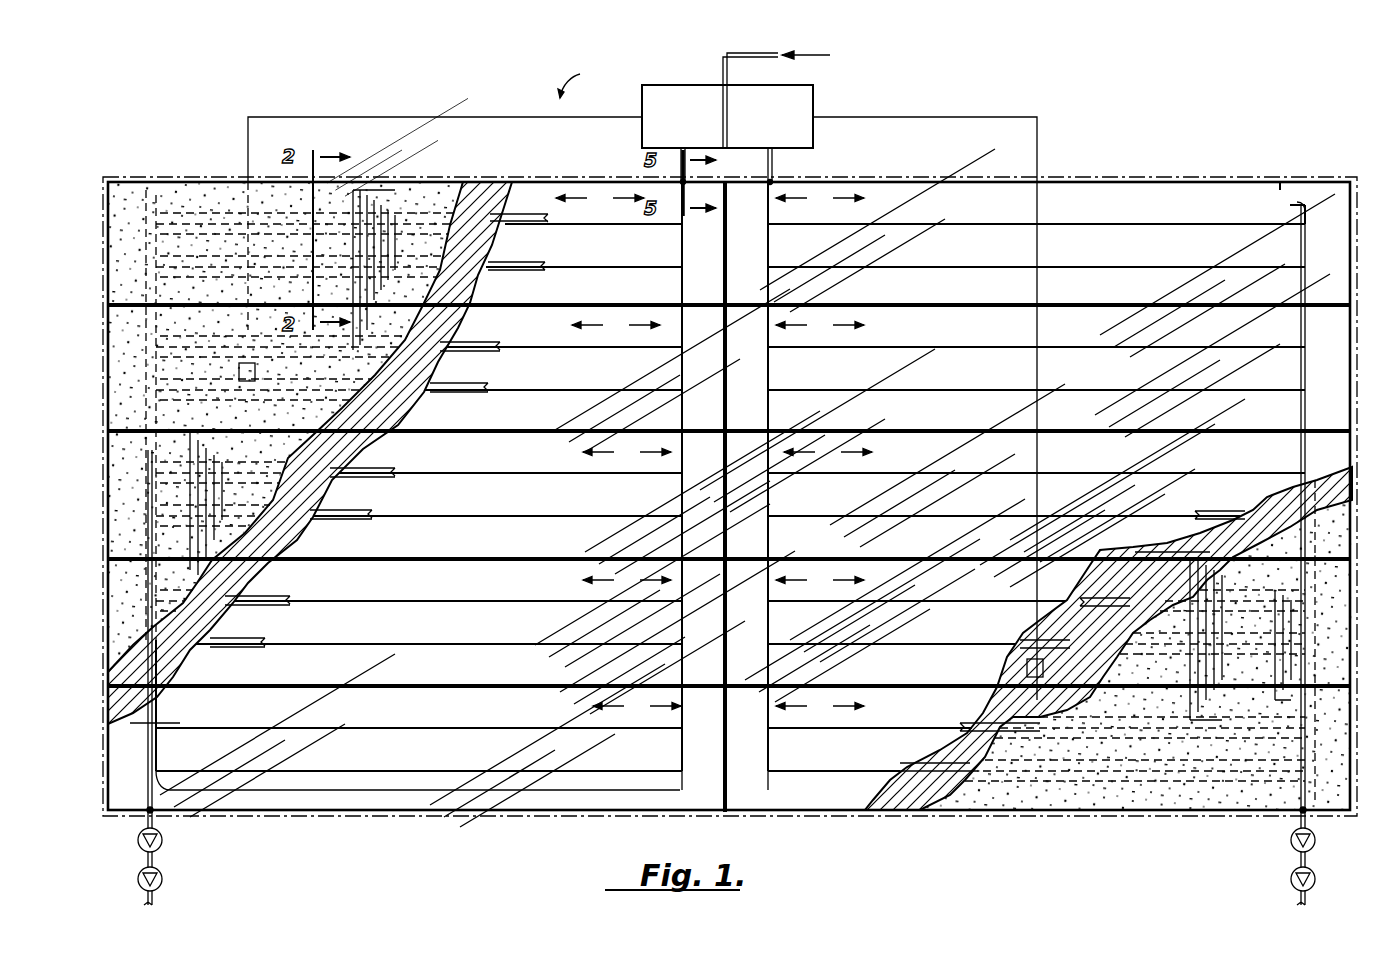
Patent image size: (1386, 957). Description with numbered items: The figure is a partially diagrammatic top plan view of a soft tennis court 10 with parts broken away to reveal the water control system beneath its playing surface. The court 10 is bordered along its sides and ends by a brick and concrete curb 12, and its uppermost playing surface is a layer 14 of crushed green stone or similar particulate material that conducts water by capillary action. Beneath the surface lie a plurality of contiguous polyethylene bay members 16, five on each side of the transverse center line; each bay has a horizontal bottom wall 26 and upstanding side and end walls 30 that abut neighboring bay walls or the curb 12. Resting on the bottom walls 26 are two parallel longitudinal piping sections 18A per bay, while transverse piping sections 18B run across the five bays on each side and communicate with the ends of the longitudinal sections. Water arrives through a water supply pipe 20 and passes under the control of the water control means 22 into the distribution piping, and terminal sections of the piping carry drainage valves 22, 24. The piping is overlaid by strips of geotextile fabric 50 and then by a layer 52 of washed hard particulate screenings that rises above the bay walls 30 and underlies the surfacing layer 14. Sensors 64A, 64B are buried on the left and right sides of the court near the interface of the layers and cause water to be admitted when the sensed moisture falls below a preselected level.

The tennis court 10 is at (578, 81).
The curb 12 is at (110, 181).
The layer of particulate tennis court surfacing material 14 is at (412, 182).
The bay members 16 is at (714, 452).
The longitudinal piping sections 18A is at (662, 258).
The transverse piping sections 18B is at (1300, 212).
The water supply pipe 20 is at (721, 70).
The water control means 22 is at (817, 105).
The drainage valve 24 is at (163, 880).
The bottom wall 26 is at (805, 834).
The upstanding side and end walls 30 is at (732, 184).
The geotextile fabric 50 is at (546, 240).
The layer of particulate screenings material 52 is at (283, 568).
The sensor 64A is at (238, 372).
The sensor 64B is at (982, 672).